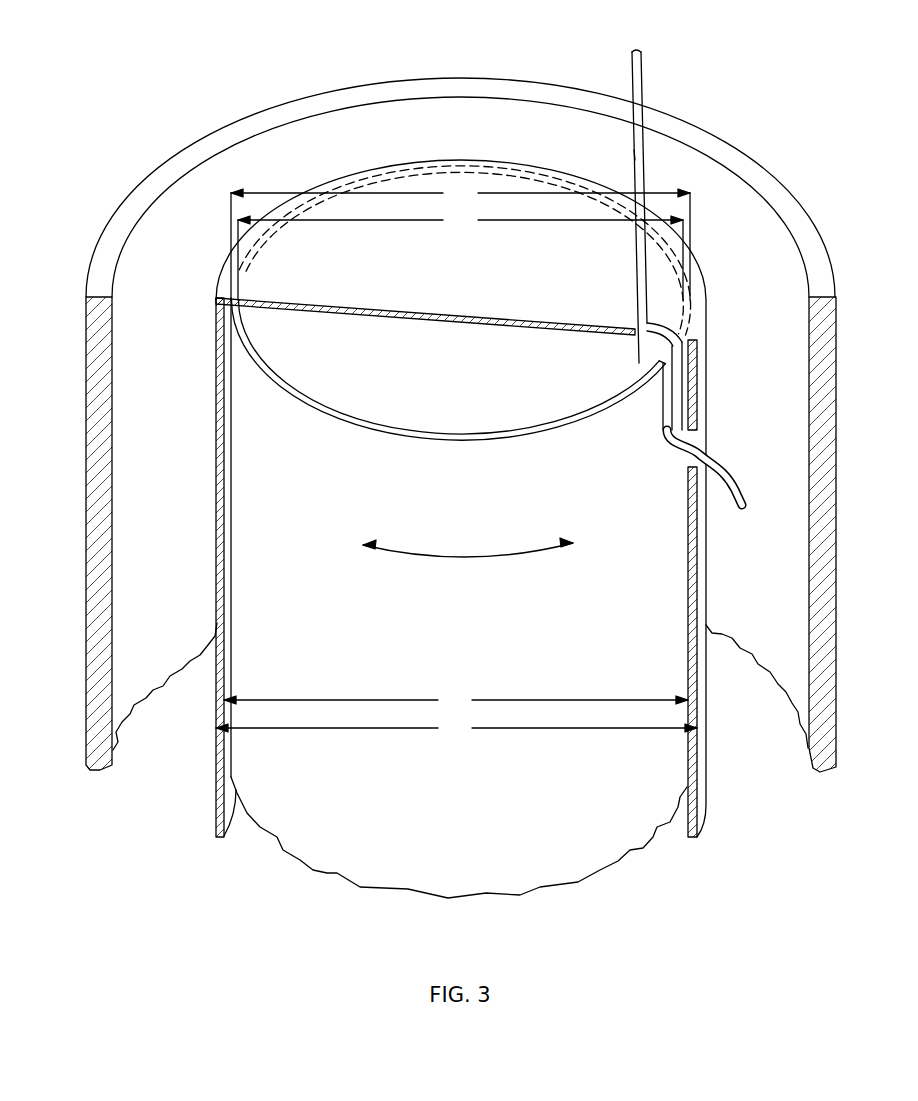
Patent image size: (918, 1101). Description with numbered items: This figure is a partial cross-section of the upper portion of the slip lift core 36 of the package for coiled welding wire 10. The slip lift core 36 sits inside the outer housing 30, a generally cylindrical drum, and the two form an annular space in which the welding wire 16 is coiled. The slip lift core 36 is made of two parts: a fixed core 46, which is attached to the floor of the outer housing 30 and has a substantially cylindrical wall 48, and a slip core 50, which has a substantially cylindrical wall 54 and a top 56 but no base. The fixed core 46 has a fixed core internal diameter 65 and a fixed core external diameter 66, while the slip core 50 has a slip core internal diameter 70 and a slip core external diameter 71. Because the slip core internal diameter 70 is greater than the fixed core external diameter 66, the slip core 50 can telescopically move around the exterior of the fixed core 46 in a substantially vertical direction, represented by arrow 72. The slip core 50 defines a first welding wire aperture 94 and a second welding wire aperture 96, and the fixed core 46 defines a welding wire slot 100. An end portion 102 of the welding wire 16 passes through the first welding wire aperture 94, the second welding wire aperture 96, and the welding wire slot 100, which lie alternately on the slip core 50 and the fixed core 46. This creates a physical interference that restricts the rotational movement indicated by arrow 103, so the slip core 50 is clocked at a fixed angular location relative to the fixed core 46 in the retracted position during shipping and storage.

The package for coiled welding wire 10 is at (194, 84).
The welding wire 16 is at (641, 66).
The outer housing 30 is at (750, 157).
The slip lift core 36 is at (503, 124).
The fixed core 46 is at (320, 398).
The cylindrical wall 48 is at (258, 466).
The slip core 50 is at (706, 568).
The cylindrical wall 54 is at (214, 398).
The top 56 is at (416, 184).
The fixed core internal diameter 65 is at (460, 254).
The fixed core external diameter 66 is at (460, 241).
The slip core internal diameter 70 is at (456, 701).
The slip core external diameter 71 is at (456, 729).
The arrow 72 is at (36, 307).
The first welding wire aperture 94 is at (635, 318).
The second welding wire aperture 96 is at (684, 467).
The welding wire slot 100 is at (670, 352).
The end portion 102 is at (636, 160).
The arrow 103 is at (470, 558).